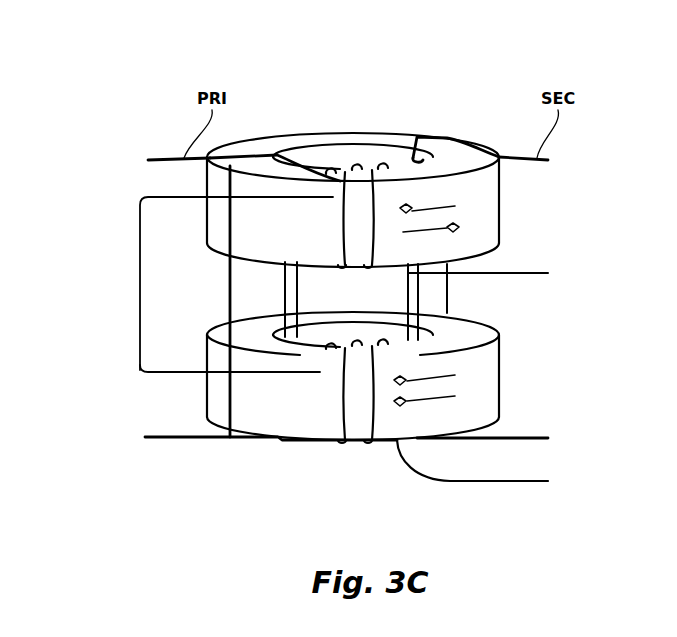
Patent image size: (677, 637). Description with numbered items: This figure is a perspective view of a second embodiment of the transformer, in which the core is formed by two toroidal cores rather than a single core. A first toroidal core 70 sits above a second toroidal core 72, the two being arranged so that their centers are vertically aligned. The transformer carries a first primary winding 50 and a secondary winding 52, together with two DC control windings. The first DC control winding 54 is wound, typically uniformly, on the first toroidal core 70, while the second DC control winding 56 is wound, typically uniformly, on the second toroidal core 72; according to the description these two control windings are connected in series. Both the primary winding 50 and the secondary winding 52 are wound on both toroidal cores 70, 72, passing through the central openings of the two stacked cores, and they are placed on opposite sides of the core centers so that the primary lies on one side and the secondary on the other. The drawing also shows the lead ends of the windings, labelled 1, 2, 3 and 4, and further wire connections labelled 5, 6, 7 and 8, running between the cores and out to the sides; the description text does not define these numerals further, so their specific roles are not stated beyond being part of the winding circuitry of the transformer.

The primary lead 1 is at (166, 162).
The primary lead 2 is at (259, 437).
The secondary lead 3 is at (537, 162).
The secondary lead 4 is at (496, 438).
The wire 5 is at (227, 279).
The wire 6 is at (430, 301).
The wire 7 is at (486, 465).
The wire 8 is at (221, 373).
The first primary winding 50 is at (160, 158).
The secondary winding 52 is at (518, 158).
The first DC control winding 54 is at (337, 212).
The second DC control winding 56 is at (345, 443).
The first toroidal core 70 is at (500, 205).
The second toroidal core 72 is at (500, 375).